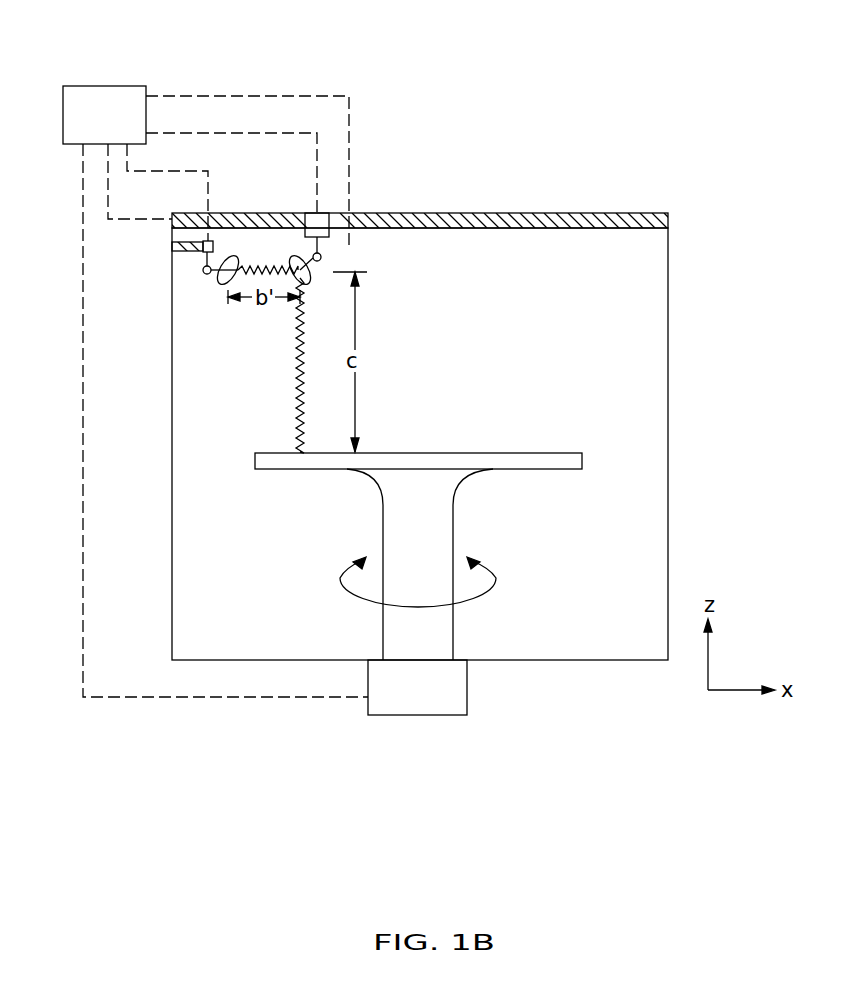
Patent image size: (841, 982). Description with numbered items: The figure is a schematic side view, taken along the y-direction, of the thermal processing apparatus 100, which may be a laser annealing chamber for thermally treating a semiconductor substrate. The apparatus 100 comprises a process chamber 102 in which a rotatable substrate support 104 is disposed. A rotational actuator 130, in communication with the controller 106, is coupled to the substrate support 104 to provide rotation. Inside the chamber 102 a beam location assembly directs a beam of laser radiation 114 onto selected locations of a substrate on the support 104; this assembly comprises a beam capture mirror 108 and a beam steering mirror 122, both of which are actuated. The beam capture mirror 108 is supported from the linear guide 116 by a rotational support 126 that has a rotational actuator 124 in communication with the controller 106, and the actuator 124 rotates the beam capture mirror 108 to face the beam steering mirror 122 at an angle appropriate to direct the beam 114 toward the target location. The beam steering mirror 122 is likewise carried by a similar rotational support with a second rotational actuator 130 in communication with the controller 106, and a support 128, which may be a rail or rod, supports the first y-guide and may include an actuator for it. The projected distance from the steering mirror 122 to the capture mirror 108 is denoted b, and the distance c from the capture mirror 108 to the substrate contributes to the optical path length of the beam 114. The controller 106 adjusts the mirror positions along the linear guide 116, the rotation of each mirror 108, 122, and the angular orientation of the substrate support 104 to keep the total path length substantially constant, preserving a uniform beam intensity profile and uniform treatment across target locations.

The thermal processing apparatus 100 is at (673, 148).
The process chamber 102 is at (668, 316).
The rotatable substrate support 104 is at (582, 461).
The controller 106 is at (82, 86).
The beam capture mirror 108 is at (308, 274).
The beam of laser radiation 114 is at (298, 372).
The linear guide 116 is at (668, 221).
The beam steering mirror 122 is at (236, 262).
The rotational actuator 124 is at (321, 258).
The rotational support 126 is at (320, 245).
The support 128 is at (172, 243).
The rotational actuator 130 is at (467, 697).